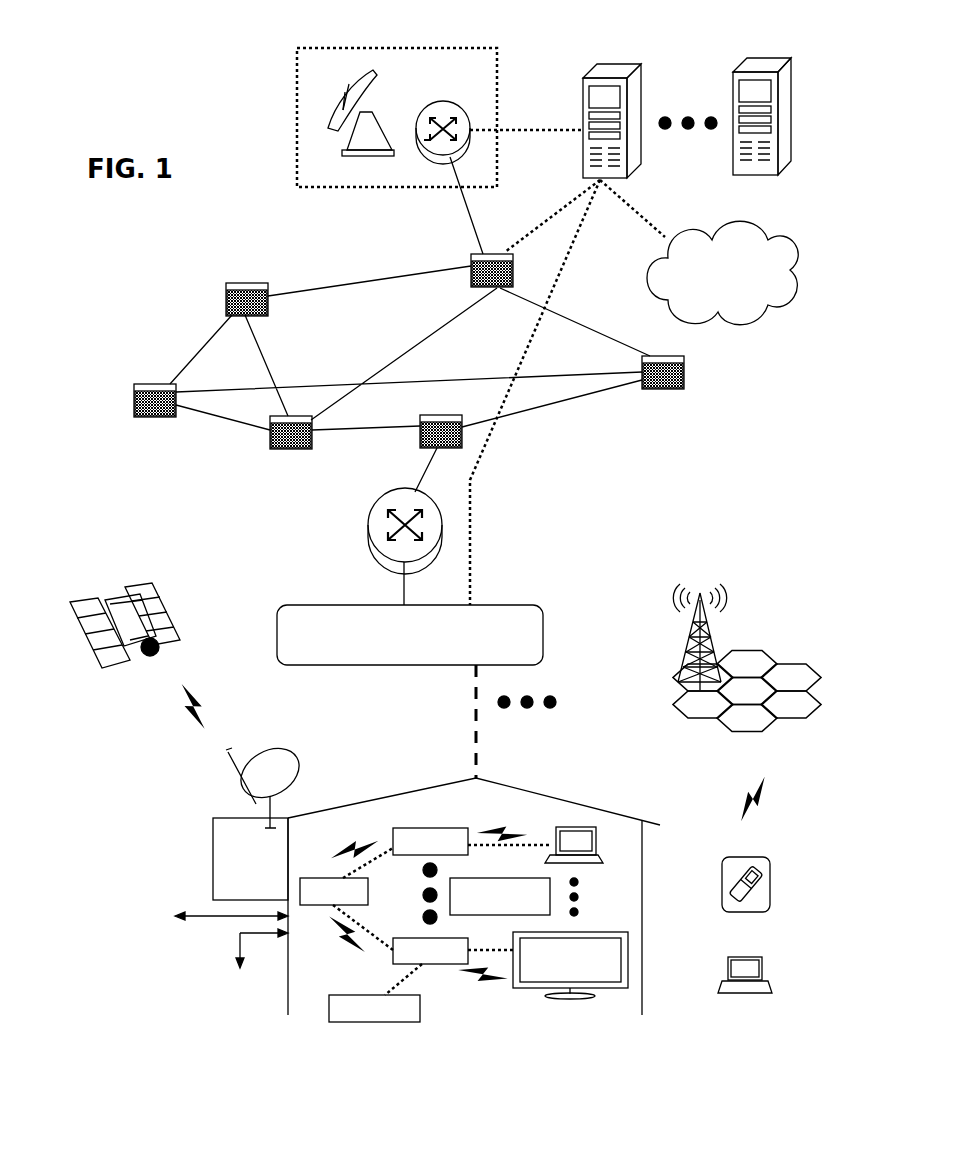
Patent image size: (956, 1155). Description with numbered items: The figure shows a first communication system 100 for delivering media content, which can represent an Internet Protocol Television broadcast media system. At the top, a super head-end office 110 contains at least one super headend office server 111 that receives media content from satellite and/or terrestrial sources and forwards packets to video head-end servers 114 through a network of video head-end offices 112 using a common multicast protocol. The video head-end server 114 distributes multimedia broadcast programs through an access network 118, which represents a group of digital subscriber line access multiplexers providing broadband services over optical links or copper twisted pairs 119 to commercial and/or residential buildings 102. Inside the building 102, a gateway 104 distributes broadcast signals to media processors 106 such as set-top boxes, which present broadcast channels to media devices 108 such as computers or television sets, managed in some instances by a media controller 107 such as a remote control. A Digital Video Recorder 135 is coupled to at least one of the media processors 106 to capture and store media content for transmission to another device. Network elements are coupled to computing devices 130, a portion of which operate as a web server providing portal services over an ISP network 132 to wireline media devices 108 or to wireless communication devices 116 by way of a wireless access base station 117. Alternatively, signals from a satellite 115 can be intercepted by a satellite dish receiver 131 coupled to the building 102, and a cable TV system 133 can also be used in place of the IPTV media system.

The communication system 100 is at (130, 129).
The building 102 is at (436, 907).
The gateway 104 is at (346, 899).
The media processor 106 is at (470, 896).
The media controller 107 is at (514, 897).
The media device 108 is at (579, 826).
The super head-end office 110 is at (302, 127).
The super headend office server 111 is at (418, 120).
The network of video head-end offices 112 is at (134, 400).
The video head-end server 114 is at (368, 538).
The satellite 115 is at (83, 633).
The wireless communication device 116 is at (770, 870).
The wireless access base station 117 is at (745, 652).
The access network 118 is at (543, 630).
The optical links or copper twisted pairs 119 is at (475, 748).
The computing device 130 is at (762, 68).
The satellite dish receiver 131 is at (198, 783).
The ISP network 132 is at (421, 575).
The cable TV system 133 is at (239, 980).
The Digital Video Recorder 135 is at (375, 993).